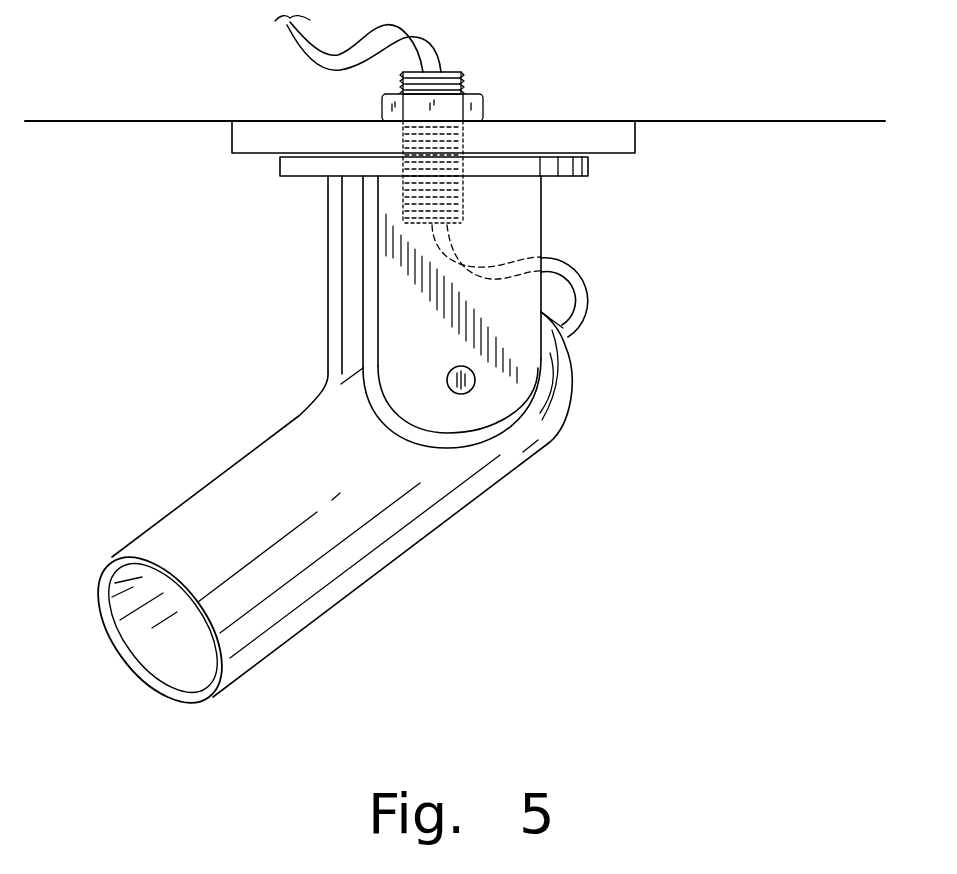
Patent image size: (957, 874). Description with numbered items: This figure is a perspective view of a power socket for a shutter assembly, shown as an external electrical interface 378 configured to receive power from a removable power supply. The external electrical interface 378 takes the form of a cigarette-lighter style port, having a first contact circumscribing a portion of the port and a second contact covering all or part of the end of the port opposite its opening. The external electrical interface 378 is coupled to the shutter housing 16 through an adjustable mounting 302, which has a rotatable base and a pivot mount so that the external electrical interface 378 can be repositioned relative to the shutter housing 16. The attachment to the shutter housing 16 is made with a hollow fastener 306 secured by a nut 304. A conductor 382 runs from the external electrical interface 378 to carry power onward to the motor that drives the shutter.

The shutter housing 16 is at (779, 107).
The adjustable mounting 302 is at (298, 238).
The nut 304 is at (479, 108).
The hollow fastener 306 is at (457, 80).
The external electrical interface 378 is at (370, 565).
The conductor 382 is at (580, 293).